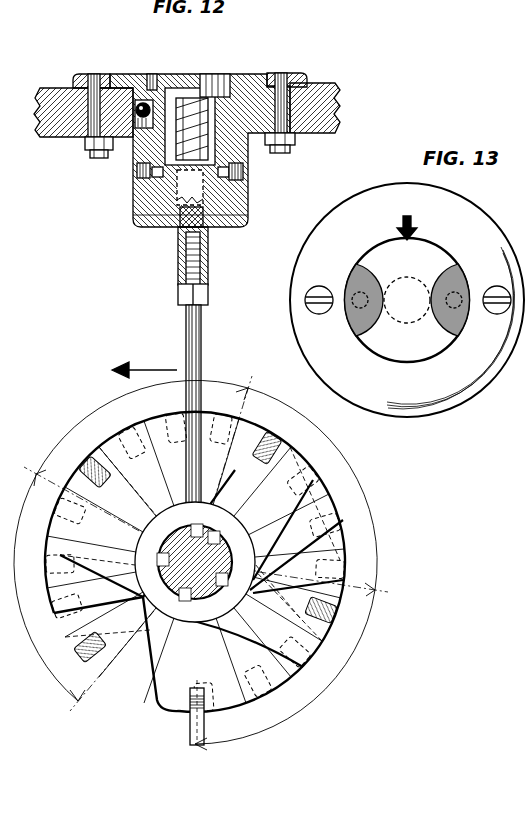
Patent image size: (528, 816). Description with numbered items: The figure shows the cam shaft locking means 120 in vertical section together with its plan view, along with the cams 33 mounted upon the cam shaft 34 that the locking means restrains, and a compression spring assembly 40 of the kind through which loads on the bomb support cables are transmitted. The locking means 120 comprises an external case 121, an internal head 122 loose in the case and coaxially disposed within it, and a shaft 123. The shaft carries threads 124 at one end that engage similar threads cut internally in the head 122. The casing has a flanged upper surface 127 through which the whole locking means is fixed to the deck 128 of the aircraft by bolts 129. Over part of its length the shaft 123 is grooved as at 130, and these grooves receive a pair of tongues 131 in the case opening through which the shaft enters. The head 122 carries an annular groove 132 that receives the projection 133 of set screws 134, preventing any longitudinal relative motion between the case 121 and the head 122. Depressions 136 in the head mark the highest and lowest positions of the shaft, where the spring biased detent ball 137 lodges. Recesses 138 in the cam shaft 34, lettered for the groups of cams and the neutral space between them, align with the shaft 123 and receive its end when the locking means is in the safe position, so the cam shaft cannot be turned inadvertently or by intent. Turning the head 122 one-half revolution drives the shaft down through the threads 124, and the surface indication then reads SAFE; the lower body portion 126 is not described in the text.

In FIG. 12, the cam shaft locking means 120 is at (325, 77).
In FIG. 12, the external case 121 is at (247, 152).
In FIG. 12, the internal head 122 is at (138, 175).
In FIG. 12, the shaft 123 is at (201, 333).
In FIG. 12, the threads 124 is at (135, 150).
In FIG. 12, the housing body 126 is at (138, 220).
In FIG. 12, the flanged upper surface 127 is at (80, 84).
In FIG. 13, the flanged upper surface 127 is at (330, 347).
In FIG. 12, the deck 128 is at (72, 112).
In FIG. 12, the bolts 129 is at (98, 80).
In FIG. 13, the bolts 129 is at (306, 297).
In FIG. 12, the grooves 130 is at (209, 230).
In FIG. 12, the tongues 131 is at (172, 228).
In FIG. 12, the annular groove 132 is at (247, 173).
In FIG. 12, the projection 133 is at (191, 187).
In FIG. 12, the set screws 134 is at (145, 183).
In FIG. 12, the depressions 136 is at (243, 93).
In FIG. 12, the spring biased detent ball 137 is at (165, 85).
In FIG. 12, the recesses 138 is at (192, 600).
In FIG. 12, the cams 33 is at (337, 537).
In FIG. 12, the shaft 34 is at (147, 572).
In FIG. 12, the compression spring assemblies 40 is at (88, 368).